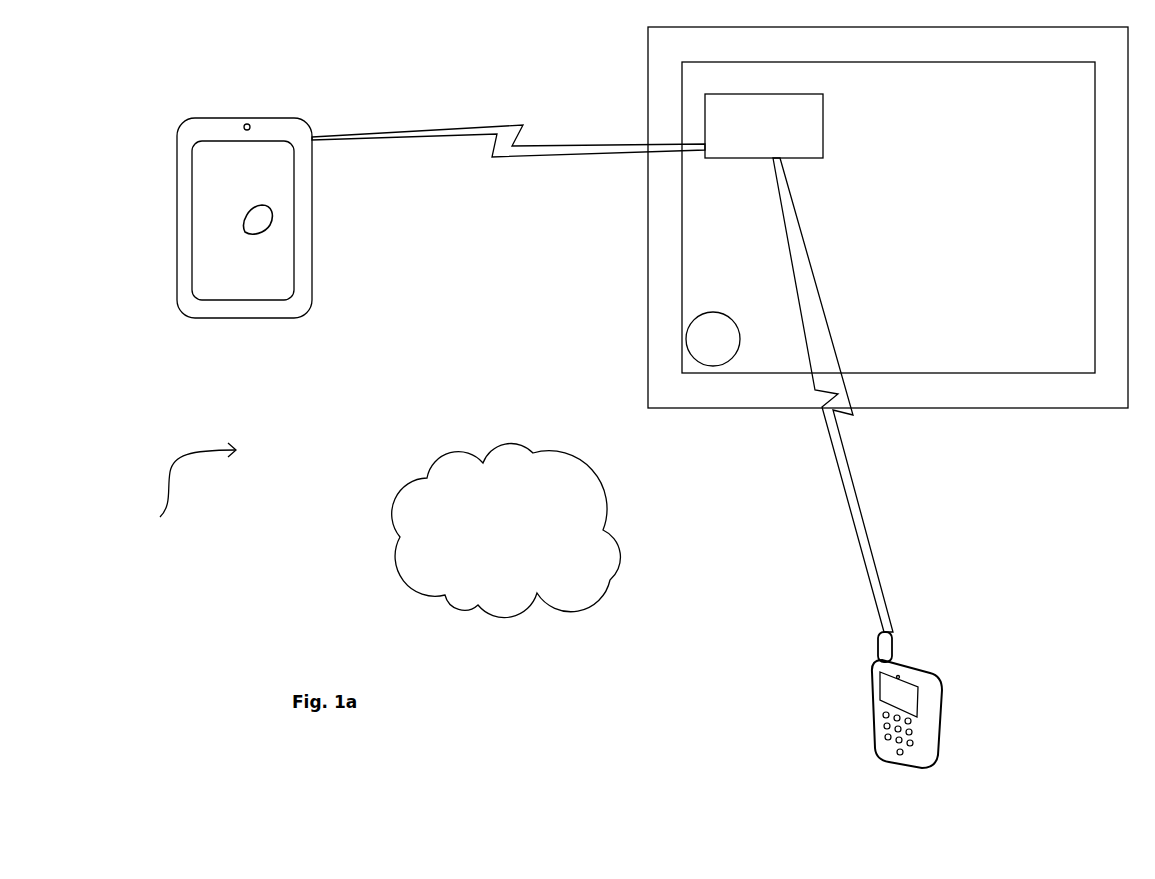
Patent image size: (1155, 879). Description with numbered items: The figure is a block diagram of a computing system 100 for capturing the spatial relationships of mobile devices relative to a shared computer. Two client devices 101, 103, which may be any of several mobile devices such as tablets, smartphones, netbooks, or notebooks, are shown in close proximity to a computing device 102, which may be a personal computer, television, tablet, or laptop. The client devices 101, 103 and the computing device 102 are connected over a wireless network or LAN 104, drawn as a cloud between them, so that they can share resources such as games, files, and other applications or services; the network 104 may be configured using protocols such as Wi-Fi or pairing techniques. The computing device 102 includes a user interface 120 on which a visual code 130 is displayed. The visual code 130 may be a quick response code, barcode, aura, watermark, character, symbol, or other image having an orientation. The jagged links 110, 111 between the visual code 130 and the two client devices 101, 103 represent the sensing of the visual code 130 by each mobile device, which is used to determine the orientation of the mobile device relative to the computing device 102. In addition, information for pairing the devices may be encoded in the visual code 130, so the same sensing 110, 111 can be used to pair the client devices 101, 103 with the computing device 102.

The computing system 100 is at (169, 493).
The client device 101 is at (243, 318).
The computing device 102 is at (807, 224).
The client device 103 is at (942, 707).
The wireless network or LAN 104 is at (525, 612).
The sensing 110 is at (523, 138).
The sensing 111 is at (868, 550).
The user interface 120 is at (765, 240).
The visual code 130 is at (705, 128).